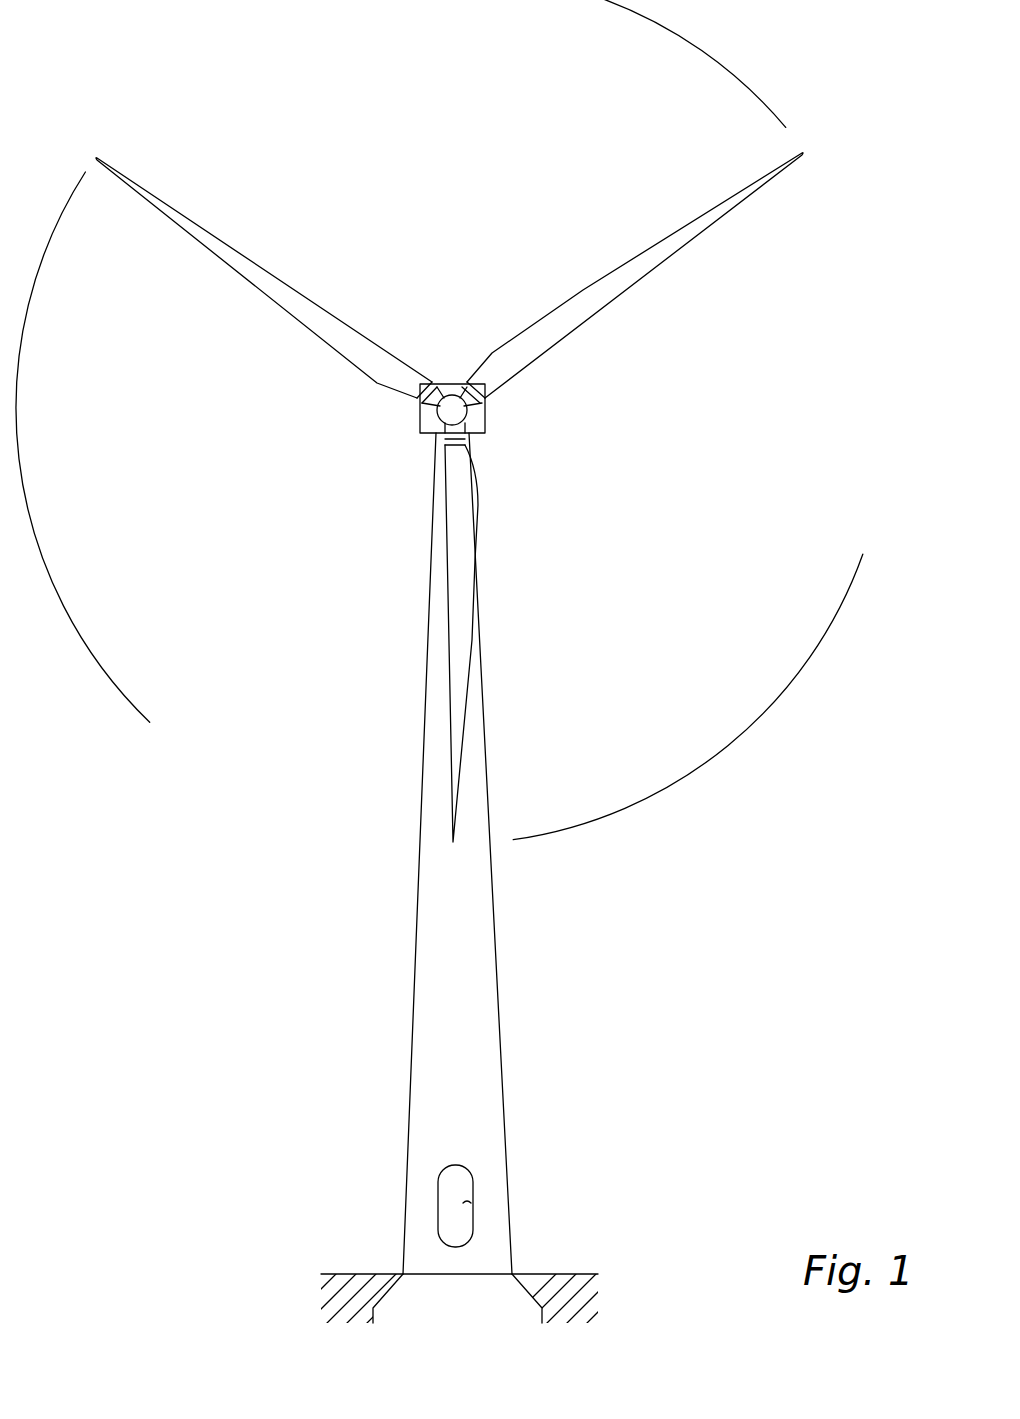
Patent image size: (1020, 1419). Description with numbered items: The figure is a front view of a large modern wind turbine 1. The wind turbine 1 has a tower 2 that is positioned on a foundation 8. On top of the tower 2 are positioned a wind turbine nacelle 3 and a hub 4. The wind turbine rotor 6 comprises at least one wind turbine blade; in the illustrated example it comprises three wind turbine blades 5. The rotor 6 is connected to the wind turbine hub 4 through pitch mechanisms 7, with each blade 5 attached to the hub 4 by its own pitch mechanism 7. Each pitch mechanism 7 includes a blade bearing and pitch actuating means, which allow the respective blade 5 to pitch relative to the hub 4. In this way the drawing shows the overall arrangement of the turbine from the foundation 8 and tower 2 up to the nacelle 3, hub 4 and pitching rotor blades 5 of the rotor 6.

The wind turbine 1 is at (385, 1078).
The tower 2 is at (488, 942).
The wind turbine nacelle 3 is at (487, 428).
The hub 4 is at (452, 398).
The wind turbine blades 5 is at (458, 680).
The wind turbine rotor 6 is at (753, 678).
The pitch mechanisms 7 is at (436, 403).
The foundation 8 is at (383, 1308).